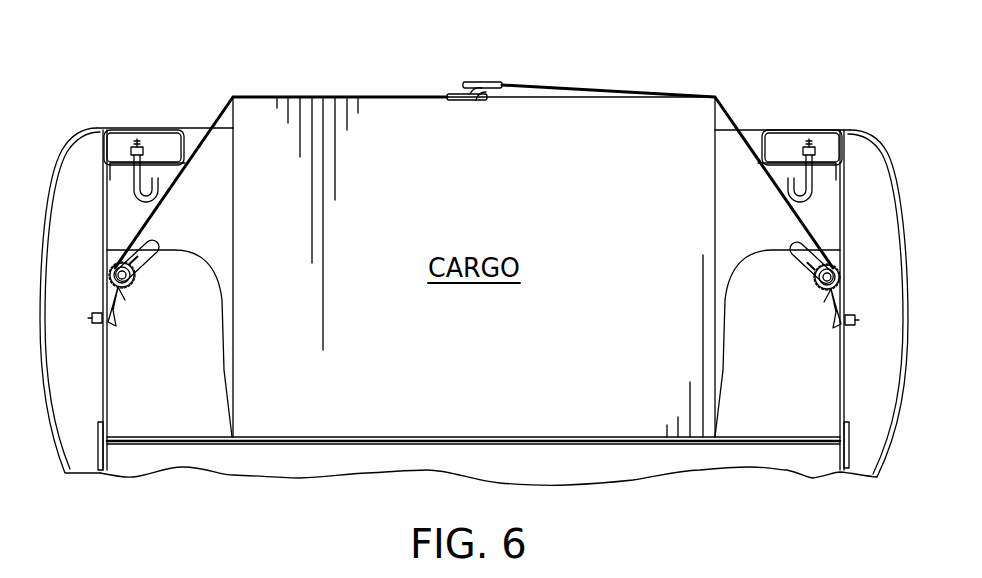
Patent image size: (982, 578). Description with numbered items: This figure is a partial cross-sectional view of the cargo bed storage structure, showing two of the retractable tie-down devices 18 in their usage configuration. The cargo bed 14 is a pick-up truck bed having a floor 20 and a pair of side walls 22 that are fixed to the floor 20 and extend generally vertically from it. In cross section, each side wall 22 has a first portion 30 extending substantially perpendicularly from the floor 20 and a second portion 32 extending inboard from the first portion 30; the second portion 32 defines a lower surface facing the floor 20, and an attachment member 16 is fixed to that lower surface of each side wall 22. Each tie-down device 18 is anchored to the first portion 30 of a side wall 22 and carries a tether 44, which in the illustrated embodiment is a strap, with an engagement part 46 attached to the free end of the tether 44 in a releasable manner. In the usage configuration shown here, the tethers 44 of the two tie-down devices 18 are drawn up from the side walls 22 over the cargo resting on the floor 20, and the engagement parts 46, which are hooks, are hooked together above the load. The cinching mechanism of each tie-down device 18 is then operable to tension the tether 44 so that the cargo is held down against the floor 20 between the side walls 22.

The cargo bed 14 is at (71, 110).
The attachment member 16 is at (136, 196).
The tie-down device 18 is at (180, 228).
The floor 20 is at (322, 445).
The side wall 22 is at (46, 174).
The first portion 30 is at (108, 380).
The second portion 32 is at (131, 128).
The tether 44 is at (222, 113).
The engagement part 46 is at (447, 94).